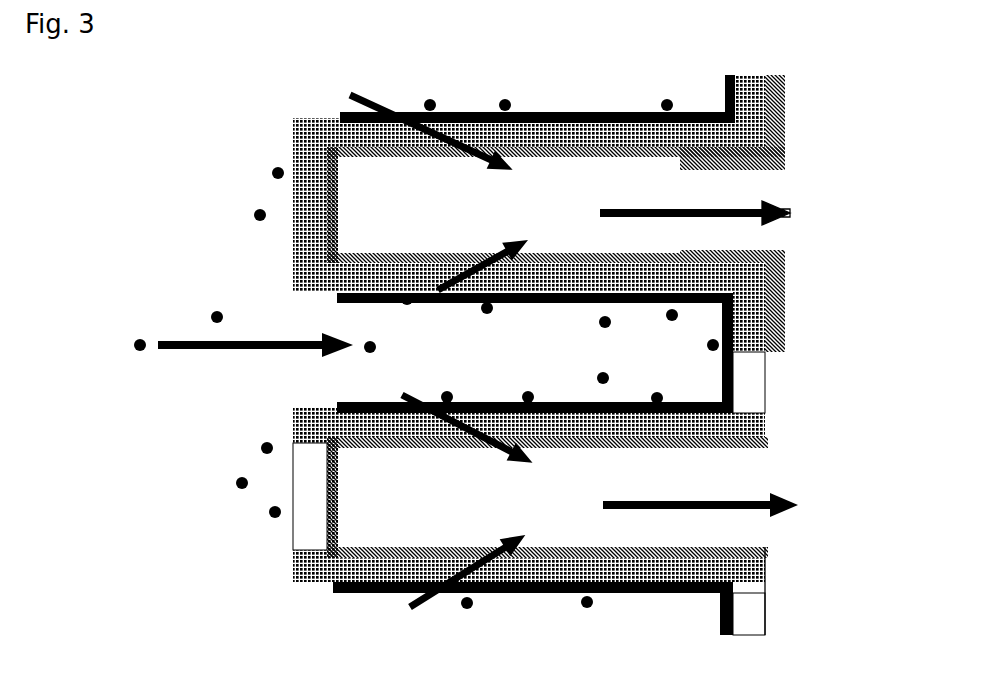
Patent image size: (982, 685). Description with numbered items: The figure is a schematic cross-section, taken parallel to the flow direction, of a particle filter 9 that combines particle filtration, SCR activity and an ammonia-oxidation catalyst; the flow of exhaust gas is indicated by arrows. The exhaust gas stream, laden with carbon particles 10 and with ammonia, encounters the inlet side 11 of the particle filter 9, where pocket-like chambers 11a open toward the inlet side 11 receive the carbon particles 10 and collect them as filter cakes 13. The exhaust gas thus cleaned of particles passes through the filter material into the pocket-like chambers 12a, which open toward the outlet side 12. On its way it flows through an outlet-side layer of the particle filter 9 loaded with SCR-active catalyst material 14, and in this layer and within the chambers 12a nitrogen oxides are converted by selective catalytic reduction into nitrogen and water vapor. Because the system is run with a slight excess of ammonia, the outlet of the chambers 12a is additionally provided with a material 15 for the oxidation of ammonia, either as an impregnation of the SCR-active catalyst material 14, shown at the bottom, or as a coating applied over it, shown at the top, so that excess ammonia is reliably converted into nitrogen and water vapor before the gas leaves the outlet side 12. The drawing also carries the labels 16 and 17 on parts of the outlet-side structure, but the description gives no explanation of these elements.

The particle filter 9 is at (292, 123).
The carbon particles 10 is at (205, 293).
The inlet side 11 is at (155, 474).
The blind hole-like chambers on the inlet side 11a is at (558, 352).
The outlet side 12 is at (917, 272).
The blind hole-like chambers on the outlet side 12a is at (430, 222).
The filter cakes 13 is at (337, 402).
The SCR-active catalyst material 14 is at (600, 450).
The material for the oxidation of ammonia 15 is at (785, 170).
The lining layer 16 is at (767, 447).
The insulating element 17 is at (753, 392).